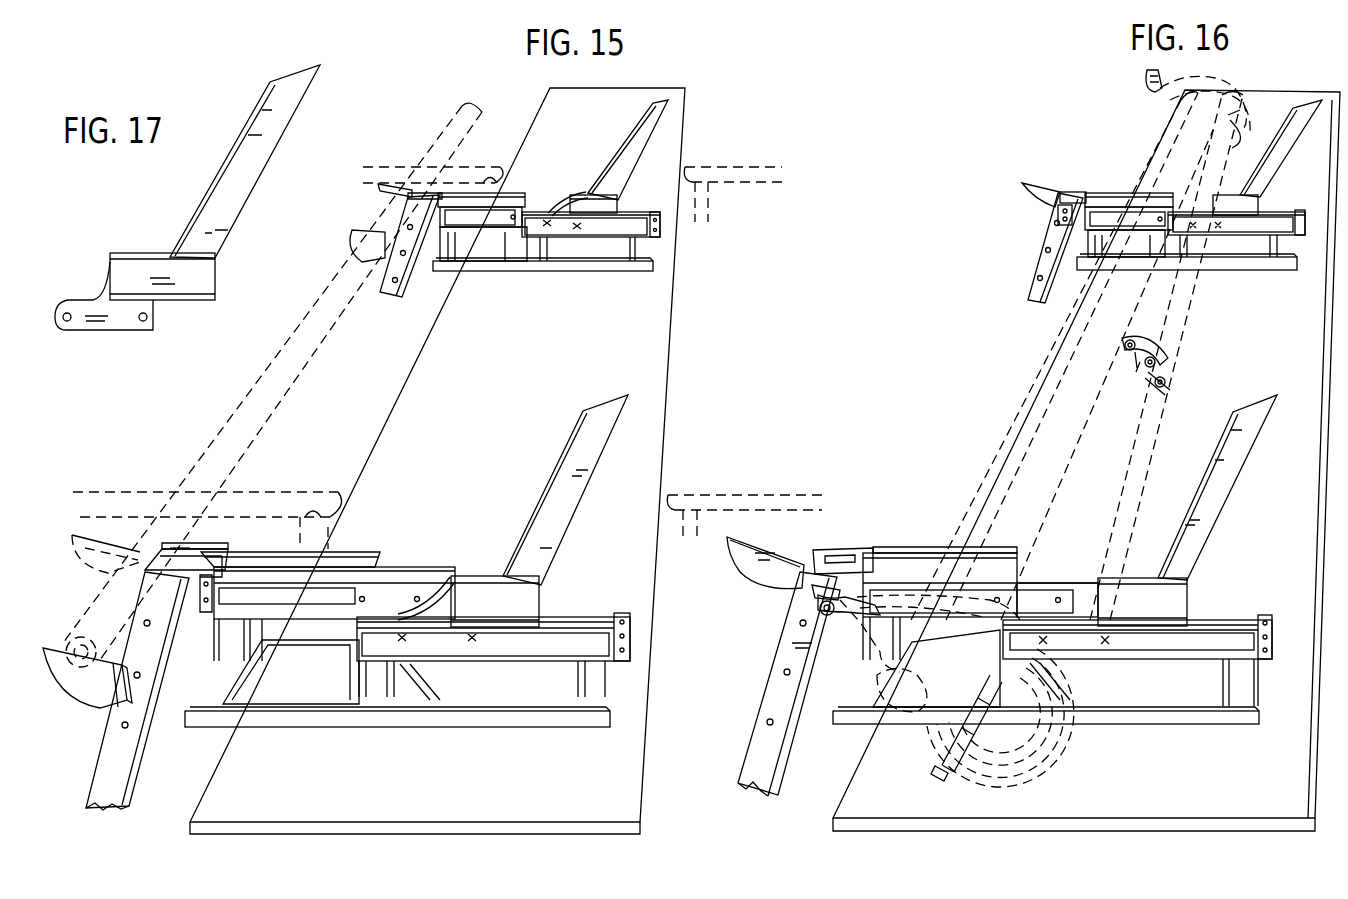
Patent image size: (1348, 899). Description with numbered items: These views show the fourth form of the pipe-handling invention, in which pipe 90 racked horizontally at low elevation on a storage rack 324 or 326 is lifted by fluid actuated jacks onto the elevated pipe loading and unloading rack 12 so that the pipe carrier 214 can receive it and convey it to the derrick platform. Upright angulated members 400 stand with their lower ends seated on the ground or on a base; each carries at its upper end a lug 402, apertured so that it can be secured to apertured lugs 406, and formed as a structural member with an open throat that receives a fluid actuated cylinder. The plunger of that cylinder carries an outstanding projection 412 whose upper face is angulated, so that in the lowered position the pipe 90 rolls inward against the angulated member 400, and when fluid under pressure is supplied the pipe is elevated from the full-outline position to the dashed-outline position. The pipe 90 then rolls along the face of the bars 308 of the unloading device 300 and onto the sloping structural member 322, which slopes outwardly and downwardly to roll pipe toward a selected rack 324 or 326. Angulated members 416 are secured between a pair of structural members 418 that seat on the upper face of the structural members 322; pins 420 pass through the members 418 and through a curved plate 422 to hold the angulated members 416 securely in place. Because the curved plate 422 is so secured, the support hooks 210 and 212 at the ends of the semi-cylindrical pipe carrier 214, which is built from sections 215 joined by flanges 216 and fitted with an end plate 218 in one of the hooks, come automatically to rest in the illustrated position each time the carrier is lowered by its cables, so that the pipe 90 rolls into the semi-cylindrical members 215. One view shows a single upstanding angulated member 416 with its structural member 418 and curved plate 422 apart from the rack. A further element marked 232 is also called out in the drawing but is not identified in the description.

In FIG. 15, the pipe loading and unloading rack 12 is at (656, 788).
In FIG. 16, the pipe loading and unloading rack 12 is at (842, 799).
In FIG. 15, the pipe 90 is at (232, 412).
In FIG. 16, the pipe 90 is at (1055, 340).
In FIG. 16, the support hook 210 is at (1165, 95).
In FIG. 16, the support hook 212 is at (822, 612).
In FIG. 16, the pipe carrier 214 is at (1250, 122).
In FIG. 16, the sections 215 is at (1200, 288).
In FIG. 16, the flanges 216 is at (1172, 350).
In FIG. 16, the end plate 218 is at (935, 740).
In FIG. 16, the conduit line 232 is at (1160, 430).
In FIG. 15, the pipe unloading device 300 is at (636, 279).
In FIG. 16, the pipe unloading device 300 is at (1258, 278).
In FIG. 15, the elevated bar 308 is at (515, 200).
In FIG. 16, the elevated bar 308 is at (1128, 193).
In FIG. 15, the structural member 322 is at (630, 214).
In FIG. 16, the structural member 322 is at (1262, 213).
In FIG. 15, the storage rack 324 is at (405, 160).
In FIG. 15, the storage rack 326 is at (730, 167).
In FIG. 15, the upright angulated member 400 is at (420, 290).
In FIG. 16, the upright angulated member 400 is at (1028, 270).
In FIG. 15, the lug 402 is at (432, 196).
In FIG. 16, the lug 402 is at (1076, 193).
In FIG. 15, the apertured lugs 406 is at (200, 596).
In FIG. 16, the apertured lugs 406 is at (1058, 225).
In FIG. 15, the outstanding projection 412 is at (355, 240).
In FIG. 16, the outstanding projection 412 is at (1030, 188).
In FIG. 17, the angulated members 416 is at (275, 105).
In FIG. 15, the angulated members 416 is at (652, 130).
In FIG. 16, the angulated members 416 is at (1288, 158).
In FIG. 17, the structural members 418 is at (215, 283).
In FIG. 15, the structural members 418 is at (615, 205).
In FIG. 16, the structural members 418 is at (1148, 578).
In FIG. 15, the pins 420 is at (575, 232).
In FIG. 16, the pins 420 is at (1107, 645).
In FIG. 17, the curved plate 422 is at (92, 298).
In FIG. 15, the curved plate 422 is at (600, 190).